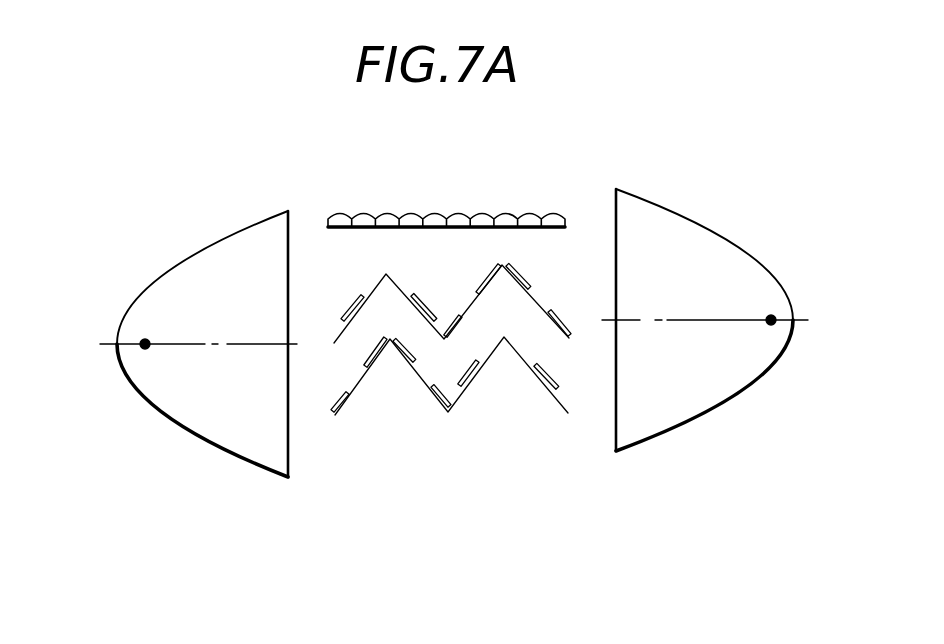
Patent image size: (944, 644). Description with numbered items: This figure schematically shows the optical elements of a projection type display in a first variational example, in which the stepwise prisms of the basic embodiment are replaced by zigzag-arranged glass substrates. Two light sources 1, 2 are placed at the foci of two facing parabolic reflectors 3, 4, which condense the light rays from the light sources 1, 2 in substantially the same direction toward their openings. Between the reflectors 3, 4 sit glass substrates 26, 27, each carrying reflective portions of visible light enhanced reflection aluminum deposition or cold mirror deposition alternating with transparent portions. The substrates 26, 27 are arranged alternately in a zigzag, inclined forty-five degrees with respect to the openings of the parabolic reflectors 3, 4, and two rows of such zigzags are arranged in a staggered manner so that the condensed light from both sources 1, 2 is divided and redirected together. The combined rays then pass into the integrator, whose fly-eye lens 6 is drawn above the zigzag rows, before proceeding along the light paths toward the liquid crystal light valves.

The light source 1 is at (145, 344).
The light source 2 is at (771, 320).
The parabolic reflector 3 is at (158, 421).
The parabolic reflector 4 is at (738, 402).
The fly-eye lens 6 is at (533, 208).
The glass substrate 26 is at (350, 305).
The glass substrate 27 is at (471, 305).